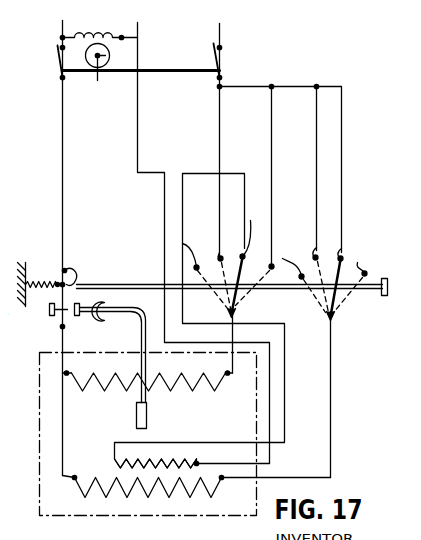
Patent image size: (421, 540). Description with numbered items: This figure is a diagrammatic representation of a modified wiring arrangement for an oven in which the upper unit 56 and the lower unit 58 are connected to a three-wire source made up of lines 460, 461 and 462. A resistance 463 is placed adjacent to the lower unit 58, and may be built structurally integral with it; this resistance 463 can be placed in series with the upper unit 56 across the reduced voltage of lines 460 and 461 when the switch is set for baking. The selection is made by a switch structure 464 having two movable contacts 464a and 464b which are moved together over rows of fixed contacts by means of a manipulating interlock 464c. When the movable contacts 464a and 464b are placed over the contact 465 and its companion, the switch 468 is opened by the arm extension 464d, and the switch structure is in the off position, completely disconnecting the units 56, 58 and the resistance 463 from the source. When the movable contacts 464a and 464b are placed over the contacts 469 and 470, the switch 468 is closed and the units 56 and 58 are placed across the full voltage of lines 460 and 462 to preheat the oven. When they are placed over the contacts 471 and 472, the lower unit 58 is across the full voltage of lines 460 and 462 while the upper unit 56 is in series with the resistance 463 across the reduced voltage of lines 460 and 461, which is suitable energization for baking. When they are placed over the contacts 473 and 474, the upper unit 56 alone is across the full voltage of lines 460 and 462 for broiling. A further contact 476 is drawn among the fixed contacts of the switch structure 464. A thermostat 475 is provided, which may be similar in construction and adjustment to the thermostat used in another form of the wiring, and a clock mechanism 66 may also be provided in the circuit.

The source line 460 is at (63, 21).
The source line 461 is at (138, 23).
The source line 462 is at (220, 23).
The clock mechanism 66 is at (110, 50).
The switch 468 is at (73, 267).
The arm extension 464d is at (84, 284).
The thermostat 475 is at (96, 321).
The upper unit 56 is at (186, 392).
The resistance 463 is at (144, 465).
The lower unit 58 is at (190, 494).
The contact 469 is at (210, 262).
The contact 465 is at (207, 274).
The contact 471 is at (256, 240).
The movable contact 464a is at (216, 316).
The contact 470 is at (312, 254).
The contact 476 is at (302, 280).
The contact 473 is at (265, 285).
The contact 472 is at (343, 255).
The contact 474 is at (356, 281).
The switch structure 464 is at (287, 306).
The movable contact 464b is at (310, 369).
The manipulating interlock 464c is at (367, 321).